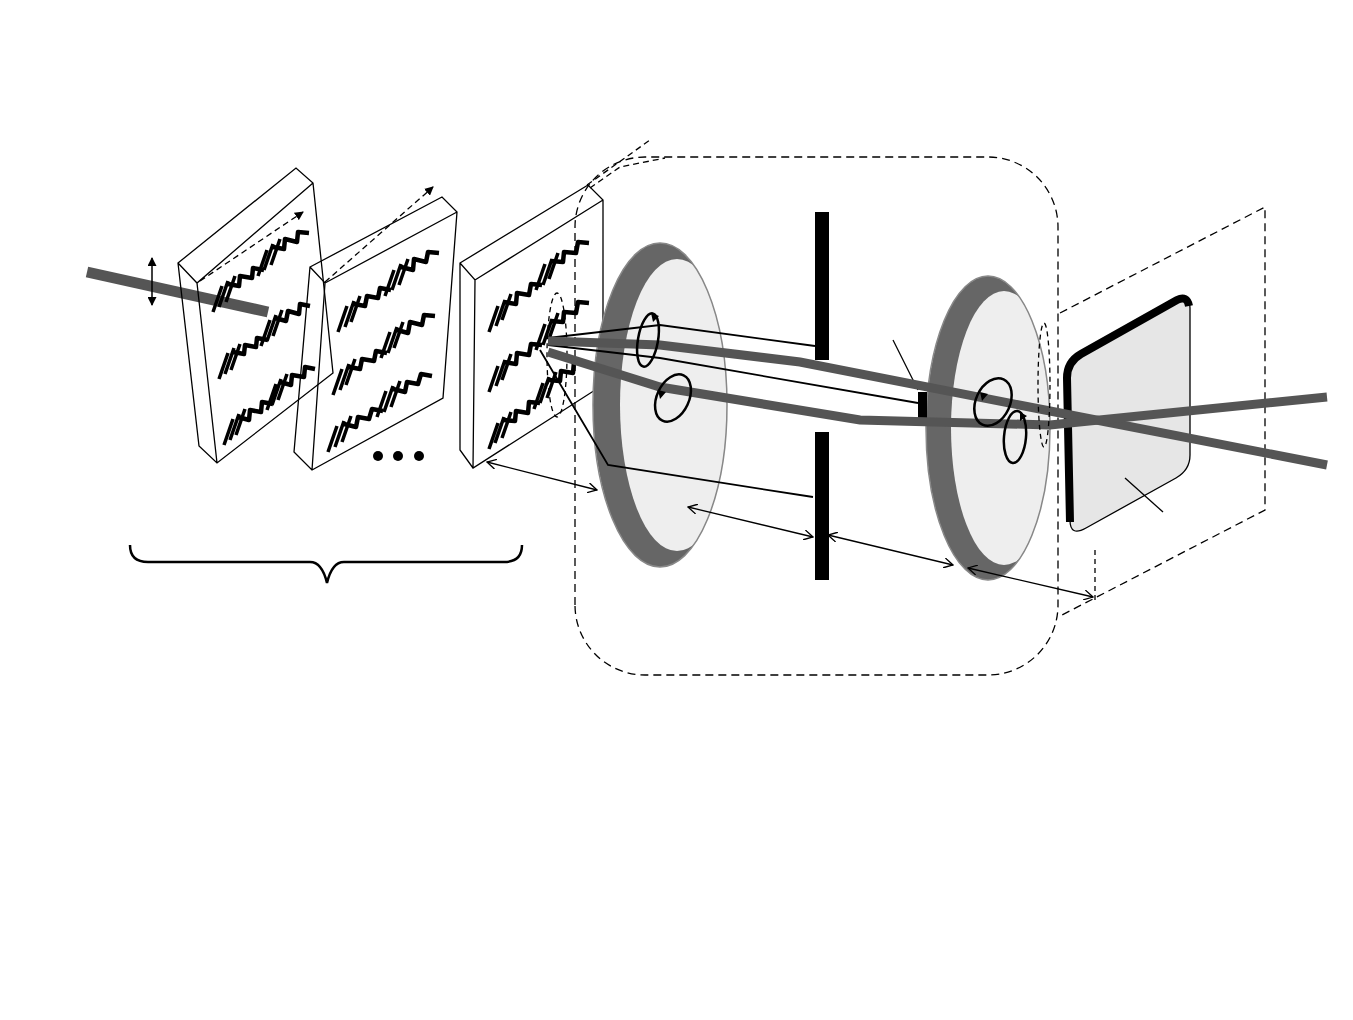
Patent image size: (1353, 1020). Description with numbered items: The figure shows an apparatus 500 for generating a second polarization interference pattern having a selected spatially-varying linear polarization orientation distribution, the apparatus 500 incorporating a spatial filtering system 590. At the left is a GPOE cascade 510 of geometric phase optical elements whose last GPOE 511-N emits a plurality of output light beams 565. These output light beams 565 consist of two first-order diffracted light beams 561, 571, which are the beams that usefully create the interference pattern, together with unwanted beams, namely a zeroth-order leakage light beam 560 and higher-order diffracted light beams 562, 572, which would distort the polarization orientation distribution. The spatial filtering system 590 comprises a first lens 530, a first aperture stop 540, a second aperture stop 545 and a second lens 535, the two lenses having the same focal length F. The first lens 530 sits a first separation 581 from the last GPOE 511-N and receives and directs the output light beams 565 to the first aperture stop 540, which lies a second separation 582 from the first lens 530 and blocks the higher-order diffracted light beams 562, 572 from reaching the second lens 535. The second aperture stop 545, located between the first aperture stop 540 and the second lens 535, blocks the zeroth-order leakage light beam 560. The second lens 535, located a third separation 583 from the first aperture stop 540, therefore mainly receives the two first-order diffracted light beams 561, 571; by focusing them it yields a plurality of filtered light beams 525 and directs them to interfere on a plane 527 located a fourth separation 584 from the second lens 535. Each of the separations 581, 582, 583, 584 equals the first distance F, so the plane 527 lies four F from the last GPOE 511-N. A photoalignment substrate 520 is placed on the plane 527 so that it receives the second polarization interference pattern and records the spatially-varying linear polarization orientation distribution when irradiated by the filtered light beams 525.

The apparatus 500 is at (158, 93).
The GPOE cascade 510 is at (397, 371).
The last GPOE 511-N is at (540, 315).
The photoalignment substrate 520 is at (1191, 418).
The plurality of filtered light beams 525 is at (1038, 385).
The plane 527 is at (1232, 232).
The first lens 530 is at (686, 331).
The second lens 535 is at (1020, 343).
The first aperture stop 540 is at (863, 379).
The second aperture stop 545 is at (897, 398).
The zeroth-order leakage light beam 560 is at (716, 378).
The first-order diffracted light beam 561 is at (826, 364).
The higher-order diffracted light beam 562 is at (701, 323).
The plurality of output light beams 565 is at (545, 382).
The first-order diffracted light beam 571 is at (737, 412).
The higher-order diffracted light beam 572 is at (638, 472).
The first separation 581 is at (553, 505).
The second separation 582 is at (750, 553).
The third separation 583 is at (891, 581).
The fourth separation 584 is at (1031, 596).
The spatial filtering system 590 is at (907, 424).